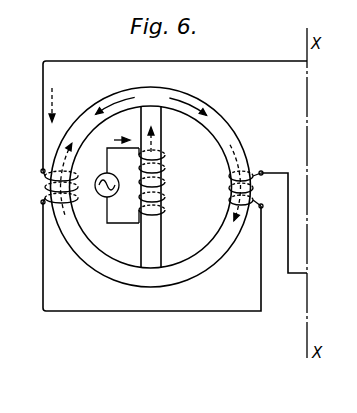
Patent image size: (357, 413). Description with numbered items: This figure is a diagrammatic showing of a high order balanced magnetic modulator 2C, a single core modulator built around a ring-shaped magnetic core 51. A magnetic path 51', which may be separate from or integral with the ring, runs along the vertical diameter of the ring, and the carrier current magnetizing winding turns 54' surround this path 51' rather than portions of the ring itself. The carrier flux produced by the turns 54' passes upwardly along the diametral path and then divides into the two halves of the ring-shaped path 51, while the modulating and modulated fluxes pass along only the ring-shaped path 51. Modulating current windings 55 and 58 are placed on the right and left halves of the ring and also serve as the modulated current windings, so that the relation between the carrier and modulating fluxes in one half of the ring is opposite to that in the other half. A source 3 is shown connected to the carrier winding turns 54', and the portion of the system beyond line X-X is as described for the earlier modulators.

The modulator 2C is at (108, 131).
The ring-shaped magnetic core 51 is at (151, 177).
The magnetic path 51' is at (170, 187).
The carrier current magnetizing winding turns 54' is at (168, 185).
The alternating current source 3 is at (117, 180).
The modulating current winding 58 is at (72, 199).
The modulating current winding 55 is at (232, 190).